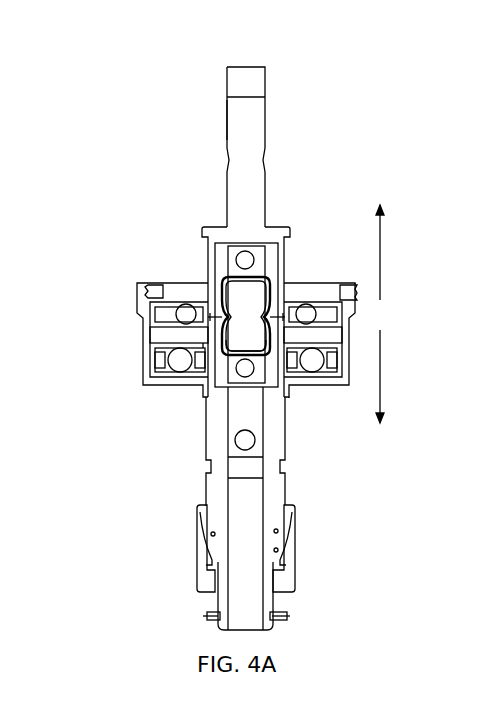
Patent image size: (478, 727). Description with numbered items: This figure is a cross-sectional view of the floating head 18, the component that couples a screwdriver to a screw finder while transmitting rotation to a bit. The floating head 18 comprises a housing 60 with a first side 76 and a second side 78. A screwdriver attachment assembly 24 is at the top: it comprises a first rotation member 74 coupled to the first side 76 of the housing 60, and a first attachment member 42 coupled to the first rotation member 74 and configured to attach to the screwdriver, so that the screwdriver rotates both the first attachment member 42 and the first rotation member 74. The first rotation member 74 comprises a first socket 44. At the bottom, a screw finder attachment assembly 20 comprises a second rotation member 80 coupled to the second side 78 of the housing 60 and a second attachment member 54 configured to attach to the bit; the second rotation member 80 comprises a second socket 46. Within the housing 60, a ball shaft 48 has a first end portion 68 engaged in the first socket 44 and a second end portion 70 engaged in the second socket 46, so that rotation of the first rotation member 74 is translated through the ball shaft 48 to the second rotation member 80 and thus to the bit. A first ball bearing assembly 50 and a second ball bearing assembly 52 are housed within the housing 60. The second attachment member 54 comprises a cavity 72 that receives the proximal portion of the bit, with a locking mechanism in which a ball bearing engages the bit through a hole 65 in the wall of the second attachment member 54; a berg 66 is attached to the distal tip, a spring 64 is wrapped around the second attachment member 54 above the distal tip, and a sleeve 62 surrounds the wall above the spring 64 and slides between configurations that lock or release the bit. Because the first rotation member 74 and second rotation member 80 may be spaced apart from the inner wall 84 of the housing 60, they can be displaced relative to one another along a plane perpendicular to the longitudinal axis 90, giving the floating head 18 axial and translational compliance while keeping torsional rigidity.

The floating head 18 is at (88, 42).
The screw finder attachment assembly 20 is at (138, 532).
The screwdriver attachment assembly 24 is at (146, 138).
The first attachment member 42 is at (245, 156).
The first socket 44 is at (222, 257).
The second socket 46 is at (273, 365).
The ball shaft 48 is at (208, 317).
The first ball bearing assembly 50 is at (143, 296).
The second ball bearing assembly 52 is at (177, 365).
The second attachment member 54 is at (223, 482).
The housing 60 is at (145, 362).
The sleeve 62 is at (203, 587).
The spring 64 is at (213, 604).
The hole 65 is at (210, 472).
The berg 66 is at (210, 620).
The first end portion 68 is at (249, 297).
The second end portion 70 is at (249, 345).
The cavity 72 is at (242, 565).
The first rotation member 74 is at (208, 243).
The first side 76 is at (332, 206).
The second side 78 is at (340, 458).
The second rotation member 80 is at (203, 342).
The inner wall 84 is at (147, 338).
The longitudinal axis 90 is at (385, 314).